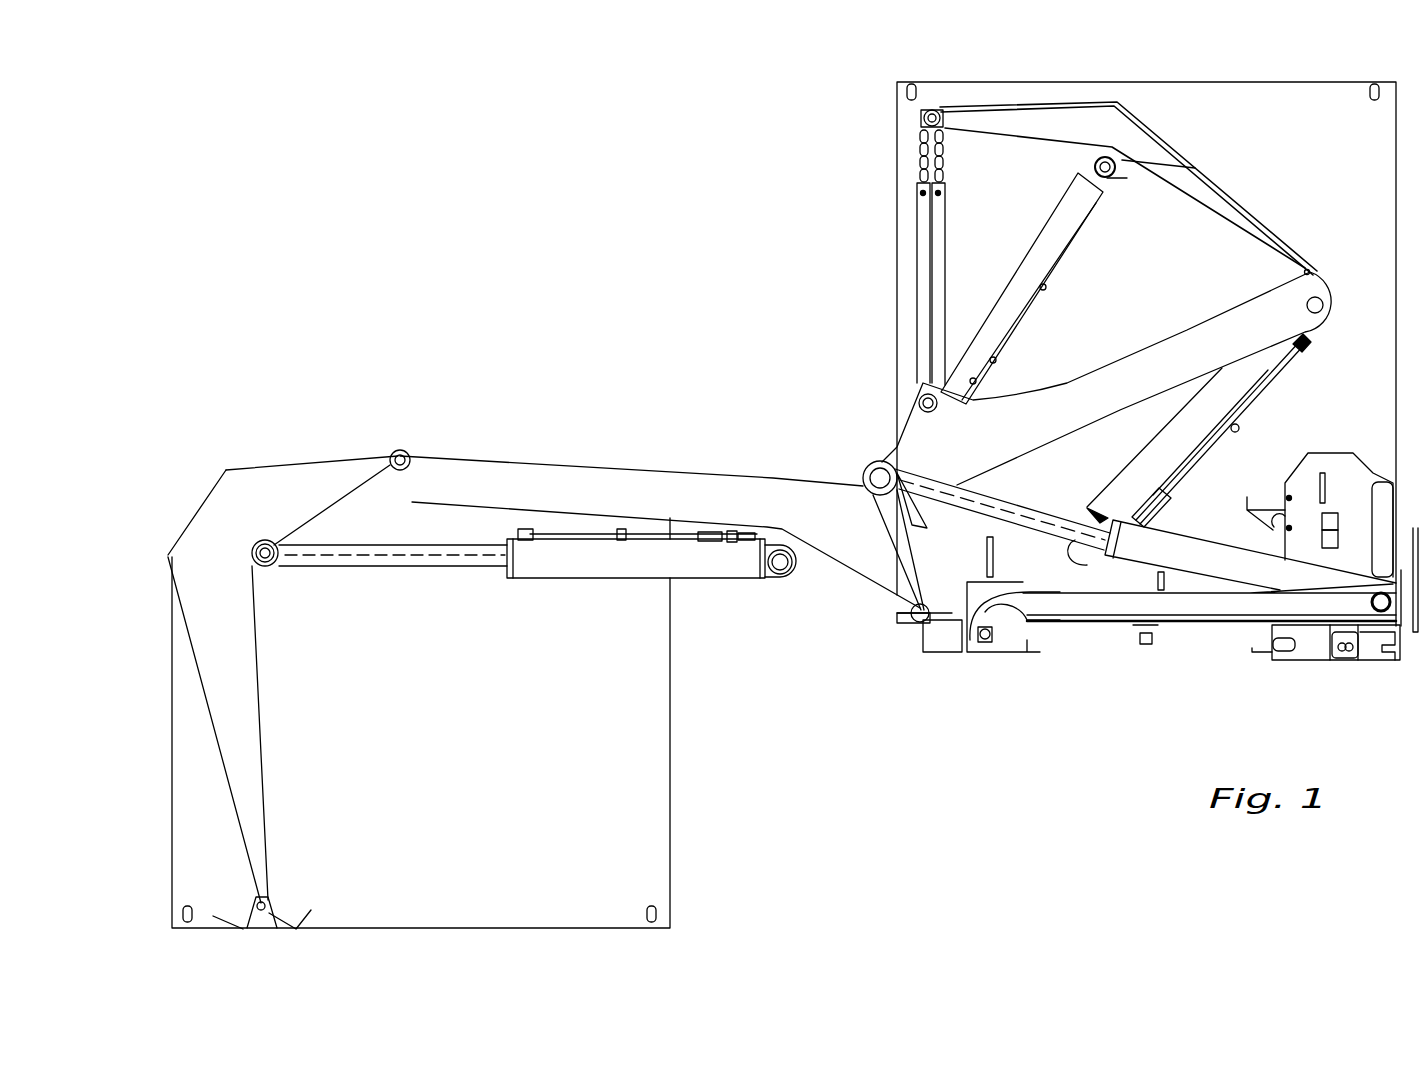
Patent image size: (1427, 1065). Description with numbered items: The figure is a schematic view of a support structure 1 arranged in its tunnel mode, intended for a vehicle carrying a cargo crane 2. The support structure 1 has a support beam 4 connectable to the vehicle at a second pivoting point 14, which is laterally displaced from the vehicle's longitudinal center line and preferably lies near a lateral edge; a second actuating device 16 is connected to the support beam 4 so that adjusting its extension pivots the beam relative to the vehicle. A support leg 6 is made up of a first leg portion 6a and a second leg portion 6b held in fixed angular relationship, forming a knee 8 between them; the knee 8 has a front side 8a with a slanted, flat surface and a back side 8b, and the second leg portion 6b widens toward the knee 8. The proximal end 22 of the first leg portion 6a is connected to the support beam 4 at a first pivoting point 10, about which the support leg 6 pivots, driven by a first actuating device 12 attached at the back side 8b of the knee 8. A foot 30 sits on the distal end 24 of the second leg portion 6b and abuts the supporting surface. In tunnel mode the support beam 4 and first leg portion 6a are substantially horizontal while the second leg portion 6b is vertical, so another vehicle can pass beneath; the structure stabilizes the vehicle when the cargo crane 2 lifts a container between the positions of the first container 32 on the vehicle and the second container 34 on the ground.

The support structure 1 is at (547, 398).
The cargo crane 2 is at (1136, 68).
The support beam 4 is at (707, 478).
The support leg 6 is at (276, 487).
The first leg portion 6a is at (353, 463).
The second leg portion 6b is at (222, 750).
The knee 8 is at (196, 543).
The front side 8a is at (205, 493).
The back side 8b is at (250, 568).
The first pivoting point 10 is at (400, 452).
The first actuating device 12 is at (607, 562).
The second pivoting point 14 is at (915, 622).
The second actuating device 16 is at (1077, 545).
The proximal end 22 is at (383, 468).
The distal end 24 is at (264, 897).
The foot 30 is at (275, 920).
The first container 32 is at (1333, 104).
The second container 34 is at (630, 785).